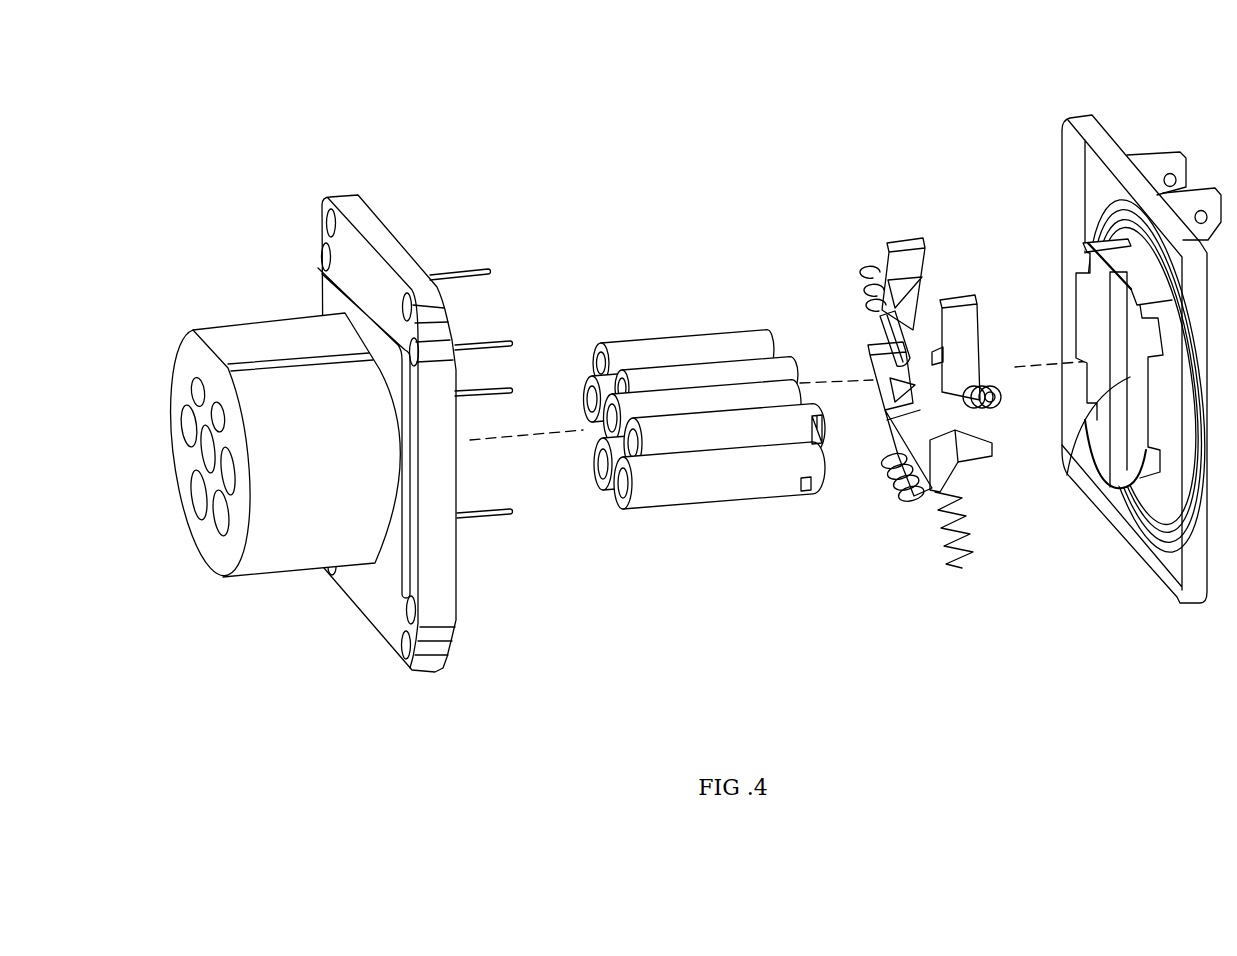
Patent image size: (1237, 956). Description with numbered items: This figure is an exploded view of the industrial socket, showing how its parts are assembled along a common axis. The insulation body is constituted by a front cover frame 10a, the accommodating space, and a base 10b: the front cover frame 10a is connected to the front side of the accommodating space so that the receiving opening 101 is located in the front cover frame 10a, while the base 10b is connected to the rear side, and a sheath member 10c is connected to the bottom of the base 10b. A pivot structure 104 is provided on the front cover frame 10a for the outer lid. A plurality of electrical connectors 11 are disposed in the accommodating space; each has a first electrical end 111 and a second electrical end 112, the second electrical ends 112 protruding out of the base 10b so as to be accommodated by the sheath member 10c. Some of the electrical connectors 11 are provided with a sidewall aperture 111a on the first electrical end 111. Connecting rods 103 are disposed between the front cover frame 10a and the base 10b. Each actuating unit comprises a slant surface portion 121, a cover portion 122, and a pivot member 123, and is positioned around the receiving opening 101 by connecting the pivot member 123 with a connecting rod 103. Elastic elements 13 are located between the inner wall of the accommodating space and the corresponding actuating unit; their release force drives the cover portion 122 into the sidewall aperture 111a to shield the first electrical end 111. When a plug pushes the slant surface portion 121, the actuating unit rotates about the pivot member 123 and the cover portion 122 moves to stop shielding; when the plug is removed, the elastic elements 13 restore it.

The front cover frame 10a is at (1134, 348).
The base 10b is at (372, 222).
The sheath member 10c is at (255, 330).
The receiving opening 101 is at (1068, 480).
The connecting rods 103 is at (497, 392).
The pivot structure 104 is at (1193, 182).
The electrical connectors 11 is at (705, 414).
The first electrical end 111 is at (762, 340).
The sidewall aperture 111a is at (808, 493).
The second electrical end 112 is at (644, 455).
The slant surface portion 121 is at (912, 292).
The cover portion 122 is at (884, 340).
The pivot member 123 is at (889, 243).
The elastic elements 13 is at (961, 485).